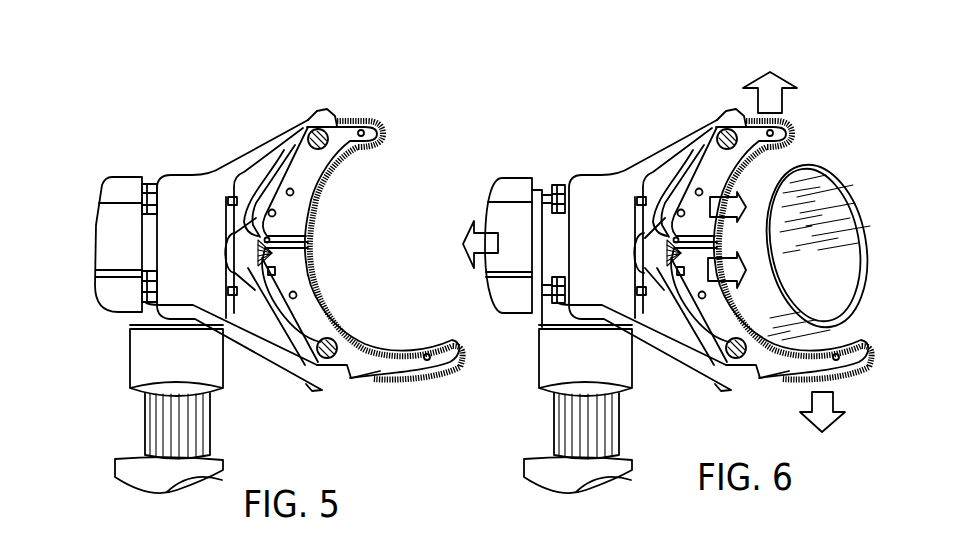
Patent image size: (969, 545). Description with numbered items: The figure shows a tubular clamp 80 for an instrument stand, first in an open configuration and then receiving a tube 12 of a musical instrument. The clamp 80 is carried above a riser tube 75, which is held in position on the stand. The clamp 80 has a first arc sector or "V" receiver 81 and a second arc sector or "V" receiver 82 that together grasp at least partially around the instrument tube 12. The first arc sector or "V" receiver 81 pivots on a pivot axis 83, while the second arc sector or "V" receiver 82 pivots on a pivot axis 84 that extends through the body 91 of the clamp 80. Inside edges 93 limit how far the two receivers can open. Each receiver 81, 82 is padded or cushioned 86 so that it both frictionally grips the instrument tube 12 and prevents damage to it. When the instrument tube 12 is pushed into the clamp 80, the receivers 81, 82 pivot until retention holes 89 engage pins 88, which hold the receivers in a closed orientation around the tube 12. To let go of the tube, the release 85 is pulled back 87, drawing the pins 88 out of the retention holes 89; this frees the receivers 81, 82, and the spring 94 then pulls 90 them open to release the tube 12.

In FIG. 6, the tube 12 is at (806, 235).
In FIG. 5, the riser tube 75 is at (210, 420).
In FIG. 6, the riser tube 75 is at (567, 409).
In FIG. 5, the tubular clamp 80 is at (226, 112).
In FIG. 5, the first arc sector or "V" receiver 81 is at (327, 160).
In FIG. 6, the first arc sector or "V" receiver 81 is at (719, 194).
In FIG. 5, the second arc sector or "V" receiver 82 is at (317, 300).
In FIG. 6, the second arc sector or "V" receiver 82 is at (762, 313).
In FIG. 5, the pivot axis 83 is at (310, 128).
In FIG. 6, the pivot axis 83 is at (731, 129).
In FIG. 5, the pivot axis 84 is at (329, 360).
In FIG. 6, the pivot axis 84 is at (736, 348).
In FIG. 5, the release 85 is at (96, 212).
In FIG. 6, the release 85 is at (489, 233).
In FIG. 5, the padding or cushion 86 is at (318, 190).
In FIG. 6, the padding or cushion 86 is at (795, 250).
In FIG. 6, the pulled back direction 87 is at (461, 231).
In FIG. 5, the pins 88 is at (228, 197).
In FIG. 6, the pins 88 is at (570, 216).
In FIG. 5, the retention holes 89 is at (308, 233).
In FIG. 6, the pull direction 90 is at (733, 250).
In FIG. 5, the body 91 is at (160, 307).
In FIG. 6, the body 91 is at (643, 253).
In FIG. 5, the inside edges 93 is at (278, 249).
In FIG. 6, the inside edges 93 is at (675, 253).
In FIG. 6, the spring 94 is at (610, 221).